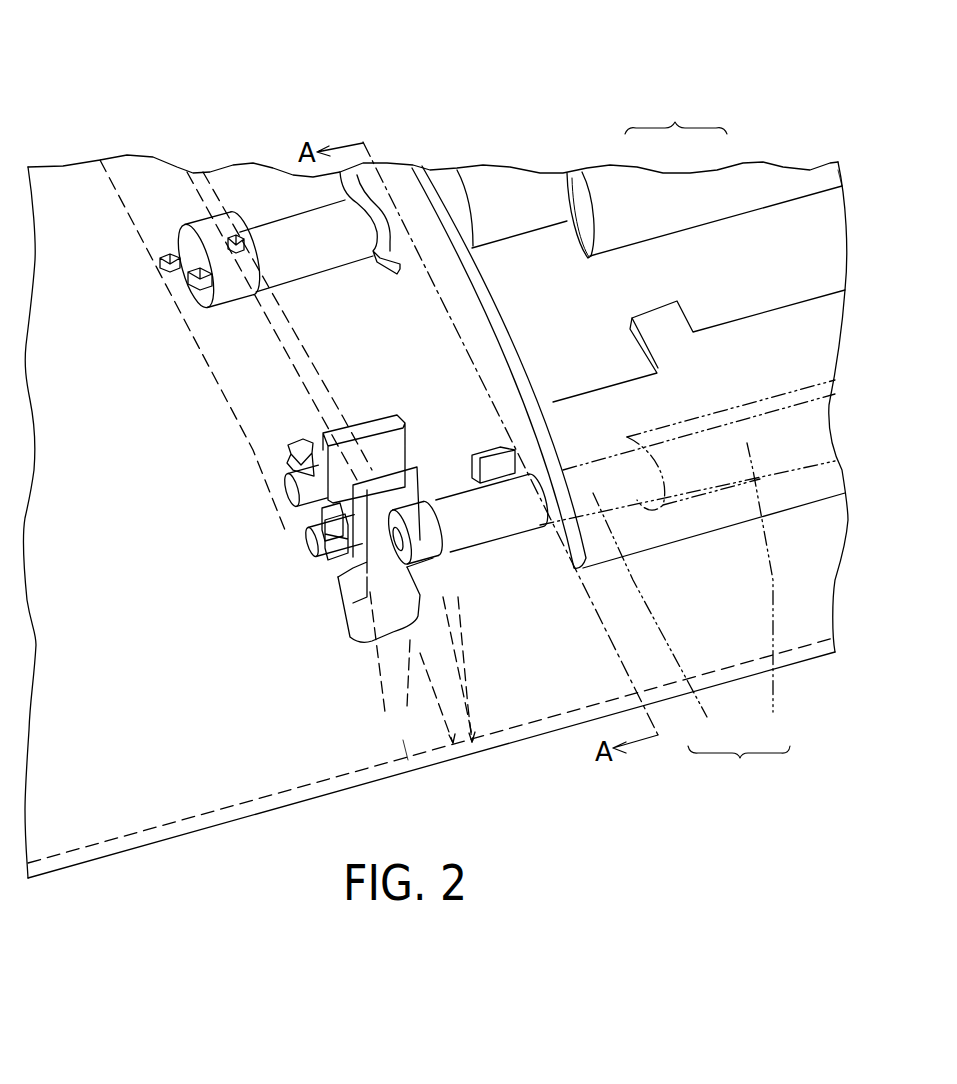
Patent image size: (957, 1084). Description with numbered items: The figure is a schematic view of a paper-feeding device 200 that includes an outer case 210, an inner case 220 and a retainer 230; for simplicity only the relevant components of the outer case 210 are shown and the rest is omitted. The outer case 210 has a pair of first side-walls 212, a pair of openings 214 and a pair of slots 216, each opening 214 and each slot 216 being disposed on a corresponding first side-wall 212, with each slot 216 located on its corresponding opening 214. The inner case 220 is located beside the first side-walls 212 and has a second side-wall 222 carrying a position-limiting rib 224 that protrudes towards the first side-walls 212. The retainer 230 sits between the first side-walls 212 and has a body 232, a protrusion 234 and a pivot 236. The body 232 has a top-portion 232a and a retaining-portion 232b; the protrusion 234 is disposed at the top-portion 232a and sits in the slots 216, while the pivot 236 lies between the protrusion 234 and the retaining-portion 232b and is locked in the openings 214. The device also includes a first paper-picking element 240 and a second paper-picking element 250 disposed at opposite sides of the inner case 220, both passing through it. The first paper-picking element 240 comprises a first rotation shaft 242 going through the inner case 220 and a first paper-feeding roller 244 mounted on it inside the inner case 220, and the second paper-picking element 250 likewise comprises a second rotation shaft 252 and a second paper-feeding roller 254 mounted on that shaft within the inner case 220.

The paper-feeding device 200 is at (917, 830).
The outer case 210 is at (826, 548).
The first side-walls 212 is at (403, 707).
The openings 214 is at (317, 560).
The slots 216 is at (294, 466).
The inner case 220 is at (820, 345).
The second side-wall 222 is at (478, 340).
The position-limiting rib 224 is at (500, 465).
The retainer 230 is at (405, 643).
The body 232 is at (310, 545).
The top-portion 232a is at (323, 433).
The retaining-portion 232b is at (393, 636).
The protrusion 234 is at (295, 493).
The pivot 236 is at (307, 540).
The first paper-picking element 240 is at (739, 767).
The first rotation shaft 242 is at (707, 717).
The first paper-feeding roller 244 is at (731, 563).
The second paper-picking element 250 is at (676, 115).
The second rotation shaft 252 is at (542, 196).
The second paper-feeding roller 254 is at (697, 203).